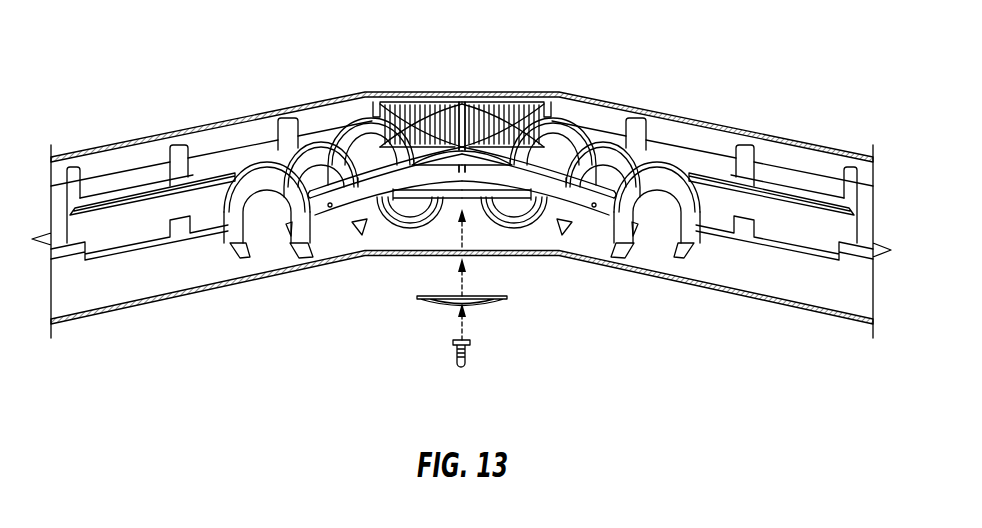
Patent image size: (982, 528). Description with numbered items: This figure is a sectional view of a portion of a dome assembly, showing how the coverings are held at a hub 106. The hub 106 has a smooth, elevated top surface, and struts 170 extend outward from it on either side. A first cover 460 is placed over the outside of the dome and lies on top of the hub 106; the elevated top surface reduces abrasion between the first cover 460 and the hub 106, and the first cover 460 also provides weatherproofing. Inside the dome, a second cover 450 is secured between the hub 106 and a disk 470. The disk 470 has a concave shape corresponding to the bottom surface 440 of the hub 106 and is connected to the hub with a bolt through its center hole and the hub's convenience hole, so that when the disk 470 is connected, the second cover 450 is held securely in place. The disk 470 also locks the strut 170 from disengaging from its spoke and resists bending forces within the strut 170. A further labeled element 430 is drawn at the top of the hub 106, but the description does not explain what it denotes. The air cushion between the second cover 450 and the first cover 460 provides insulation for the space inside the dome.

The hub 106 is at (562, 99).
The strut 170 is at (138, 178).
The bracket 430 is at (497, 99).
The bottom surface 440 is at (421, 237).
The second cover 450 is at (681, 285).
The first cover 460 is at (707, 122).
The disk 470 is at (484, 304).